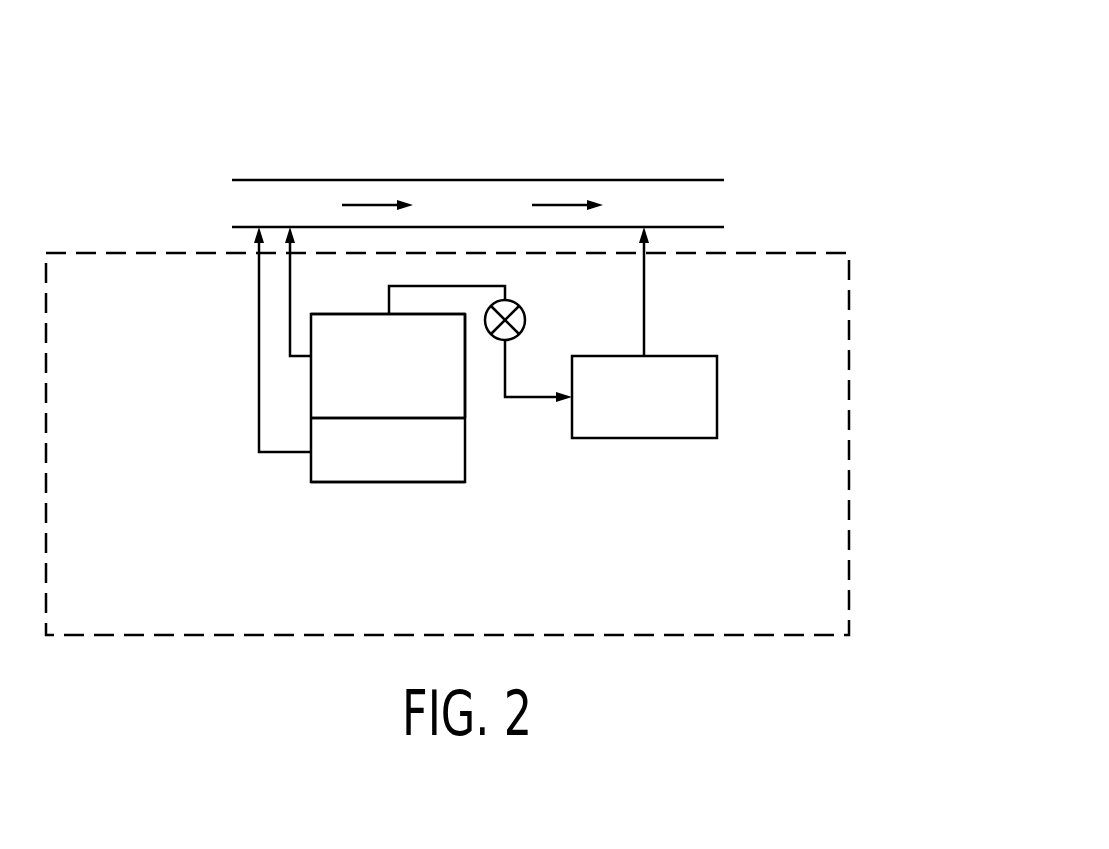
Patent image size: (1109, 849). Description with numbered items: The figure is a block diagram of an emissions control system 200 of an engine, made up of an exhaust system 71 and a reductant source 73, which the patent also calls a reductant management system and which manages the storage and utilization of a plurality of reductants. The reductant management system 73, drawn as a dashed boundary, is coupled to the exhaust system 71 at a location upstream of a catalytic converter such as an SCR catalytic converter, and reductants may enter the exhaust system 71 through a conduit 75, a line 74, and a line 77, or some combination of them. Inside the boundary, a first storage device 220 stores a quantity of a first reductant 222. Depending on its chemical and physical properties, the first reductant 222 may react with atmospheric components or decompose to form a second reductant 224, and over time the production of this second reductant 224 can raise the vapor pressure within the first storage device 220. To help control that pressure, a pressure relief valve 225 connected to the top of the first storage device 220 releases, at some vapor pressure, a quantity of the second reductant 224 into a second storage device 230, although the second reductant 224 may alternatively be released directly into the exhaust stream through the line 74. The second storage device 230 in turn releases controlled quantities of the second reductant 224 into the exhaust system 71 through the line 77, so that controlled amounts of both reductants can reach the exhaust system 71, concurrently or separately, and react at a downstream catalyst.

The emissions control system 200 is at (742, 88).
The exhaust system 71 is at (348, 179).
The reductant source 73 is at (850, 437).
The line 74 is at (292, 270).
The conduit 75 is at (258, 365).
The line 77 is at (646, 297).
The first storage device 220 is at (387, 503).
The first reductant 222 is at (322, 468).
The second reductant 224 is at (460, 400).
The pressure relief valve 225 is at (527, 315).
The second storage device 230 is at (648, 439).